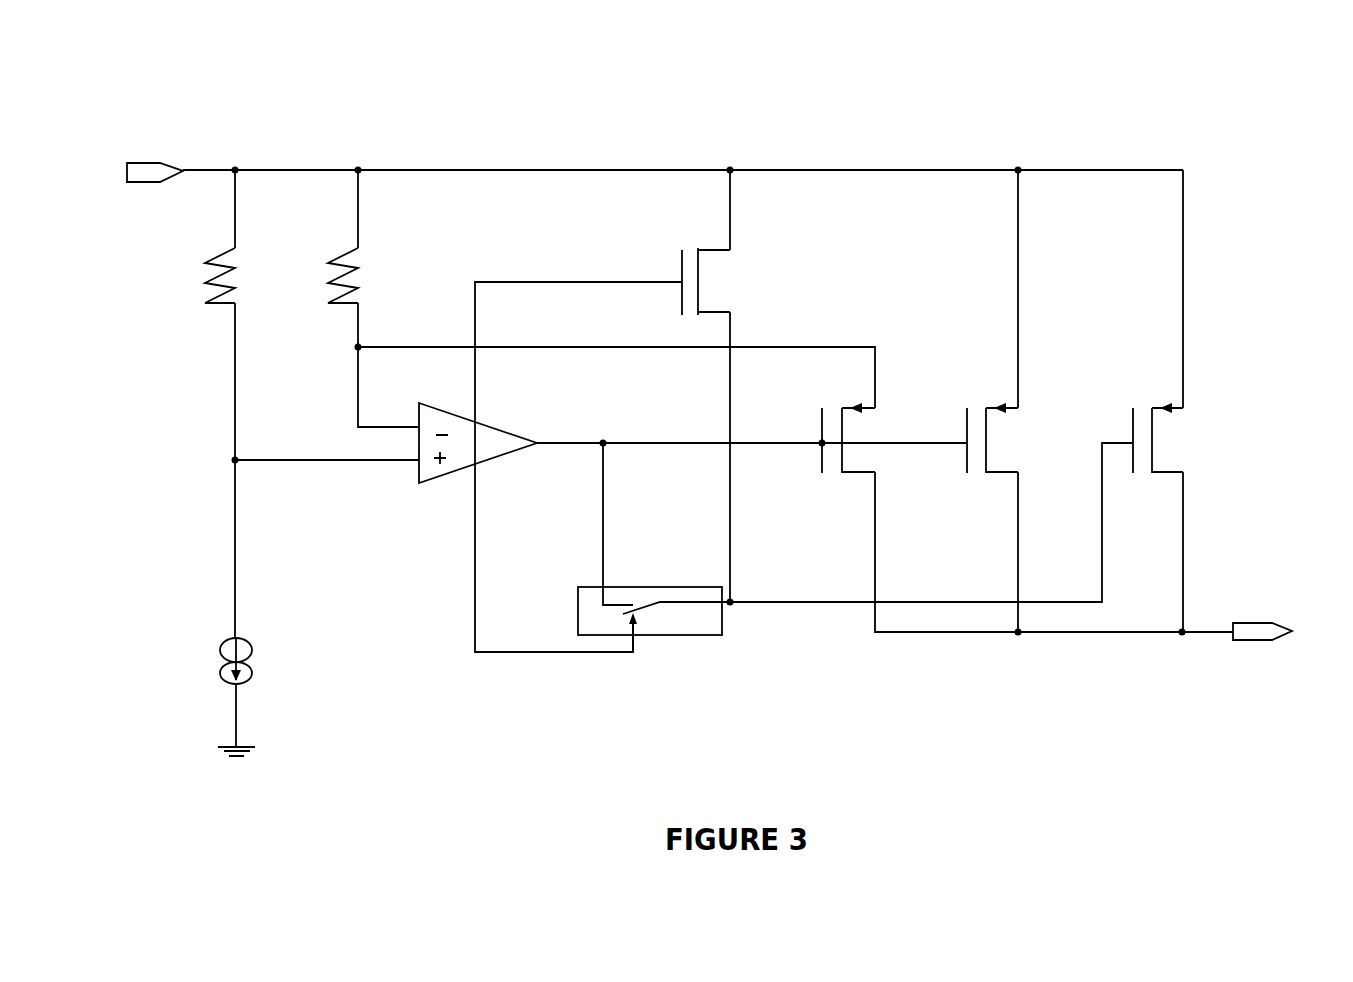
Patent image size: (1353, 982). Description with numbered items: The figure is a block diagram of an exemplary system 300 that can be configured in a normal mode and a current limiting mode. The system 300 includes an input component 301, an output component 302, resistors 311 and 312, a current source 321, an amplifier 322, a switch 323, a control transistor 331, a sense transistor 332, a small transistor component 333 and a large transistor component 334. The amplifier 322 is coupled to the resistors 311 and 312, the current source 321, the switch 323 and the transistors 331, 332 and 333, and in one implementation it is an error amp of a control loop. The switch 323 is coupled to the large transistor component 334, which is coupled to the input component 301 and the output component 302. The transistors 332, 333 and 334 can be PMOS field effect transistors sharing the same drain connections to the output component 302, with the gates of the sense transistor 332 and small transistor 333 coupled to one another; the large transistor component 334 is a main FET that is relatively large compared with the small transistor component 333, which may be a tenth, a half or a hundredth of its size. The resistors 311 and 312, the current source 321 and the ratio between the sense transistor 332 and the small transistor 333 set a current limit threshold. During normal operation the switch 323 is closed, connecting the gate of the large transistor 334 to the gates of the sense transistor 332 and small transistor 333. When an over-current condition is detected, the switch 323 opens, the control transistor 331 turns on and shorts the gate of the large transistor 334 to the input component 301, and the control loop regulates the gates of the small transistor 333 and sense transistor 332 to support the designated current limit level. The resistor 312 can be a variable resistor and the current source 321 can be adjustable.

The system 300 is at (700, 64).
The input component 301 is at (114, 174).
The output component 302 is at (1221, 627).
The resistor 311 is at (189, 292).
The resistor 312 is at (312, 292).
The current source 321 is at (206, 667).
The amplifier 322 is at (401, 416).
The switch 323 is at (566, 611).
The control transistor 331 is at (664, 270).
The sense transistor 332 is at (811, 426).
The small transistor component 333 is at (956, 426).
The large transistor component 334 is at (1119, 426).